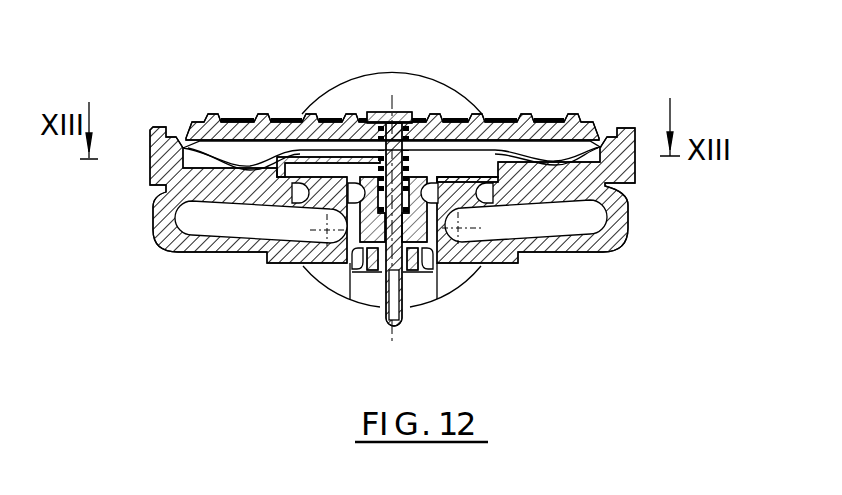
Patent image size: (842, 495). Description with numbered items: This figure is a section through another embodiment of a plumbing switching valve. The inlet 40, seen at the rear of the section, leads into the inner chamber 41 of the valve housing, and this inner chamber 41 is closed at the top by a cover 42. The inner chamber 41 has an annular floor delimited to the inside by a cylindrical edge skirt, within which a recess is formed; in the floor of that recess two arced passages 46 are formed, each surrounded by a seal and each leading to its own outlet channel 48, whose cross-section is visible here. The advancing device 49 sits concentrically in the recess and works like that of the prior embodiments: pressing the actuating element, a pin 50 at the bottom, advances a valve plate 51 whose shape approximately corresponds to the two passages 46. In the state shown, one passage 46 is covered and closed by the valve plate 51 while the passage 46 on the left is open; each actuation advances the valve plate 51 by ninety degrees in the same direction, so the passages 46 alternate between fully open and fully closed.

The inlet 40 is at (437, 104).
The inner chamber 41 is at (573, 127).
The cover 42 is at (238, 132).
The arced passages 46 is at (326, 232).
The outlet channel 48 is at (223, 222).
The advancing device 49 is at (354, 317).
The pin 50 is at (411, 302).
The valve plate 51 is at (463, 212).